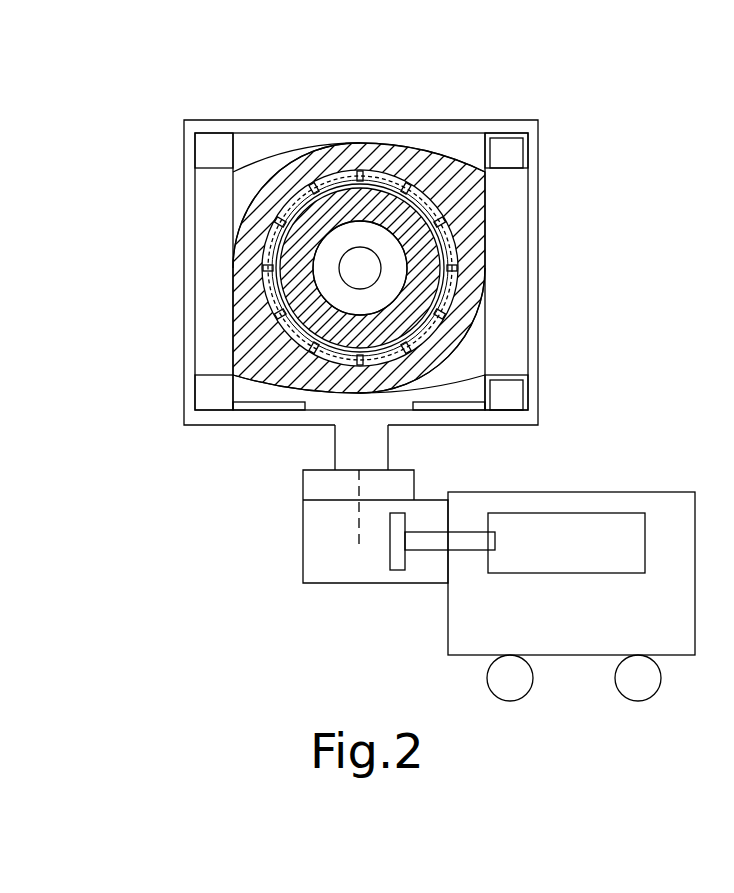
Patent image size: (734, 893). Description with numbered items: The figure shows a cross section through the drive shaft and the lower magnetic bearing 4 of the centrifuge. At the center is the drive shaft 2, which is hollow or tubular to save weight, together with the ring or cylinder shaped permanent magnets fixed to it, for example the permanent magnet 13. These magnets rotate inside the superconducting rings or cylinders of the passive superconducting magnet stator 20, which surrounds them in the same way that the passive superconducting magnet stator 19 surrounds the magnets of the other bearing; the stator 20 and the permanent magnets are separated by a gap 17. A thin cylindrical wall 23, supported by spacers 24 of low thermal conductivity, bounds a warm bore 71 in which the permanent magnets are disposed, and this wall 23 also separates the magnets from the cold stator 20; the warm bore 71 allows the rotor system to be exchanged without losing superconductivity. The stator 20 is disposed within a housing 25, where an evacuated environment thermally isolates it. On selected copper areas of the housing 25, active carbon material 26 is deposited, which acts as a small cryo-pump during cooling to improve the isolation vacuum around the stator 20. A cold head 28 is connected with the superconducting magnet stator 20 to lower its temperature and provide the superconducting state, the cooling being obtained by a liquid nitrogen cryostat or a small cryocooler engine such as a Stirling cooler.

The drive shaft 2 is at (342, 290).
The magnetic bearing 4 is at (417, 165).
The permanent magnet 13 is at (297, 257).
The gap 17 is at (293, 217).
The passive superconducting magnet stator 19 is at (478, 268).
The passive superconducting magnet stator 20 is at (457, 325).
The cylindrical wall 23 is at (453, 268).
The spacers 24 is at (448, 230).
The housing 25 is at (378, 90).
The active carbon material 26 is at (215, 397).
The cold head 28 is at (337, 543).
The warm bore 71 is at (420, 215).